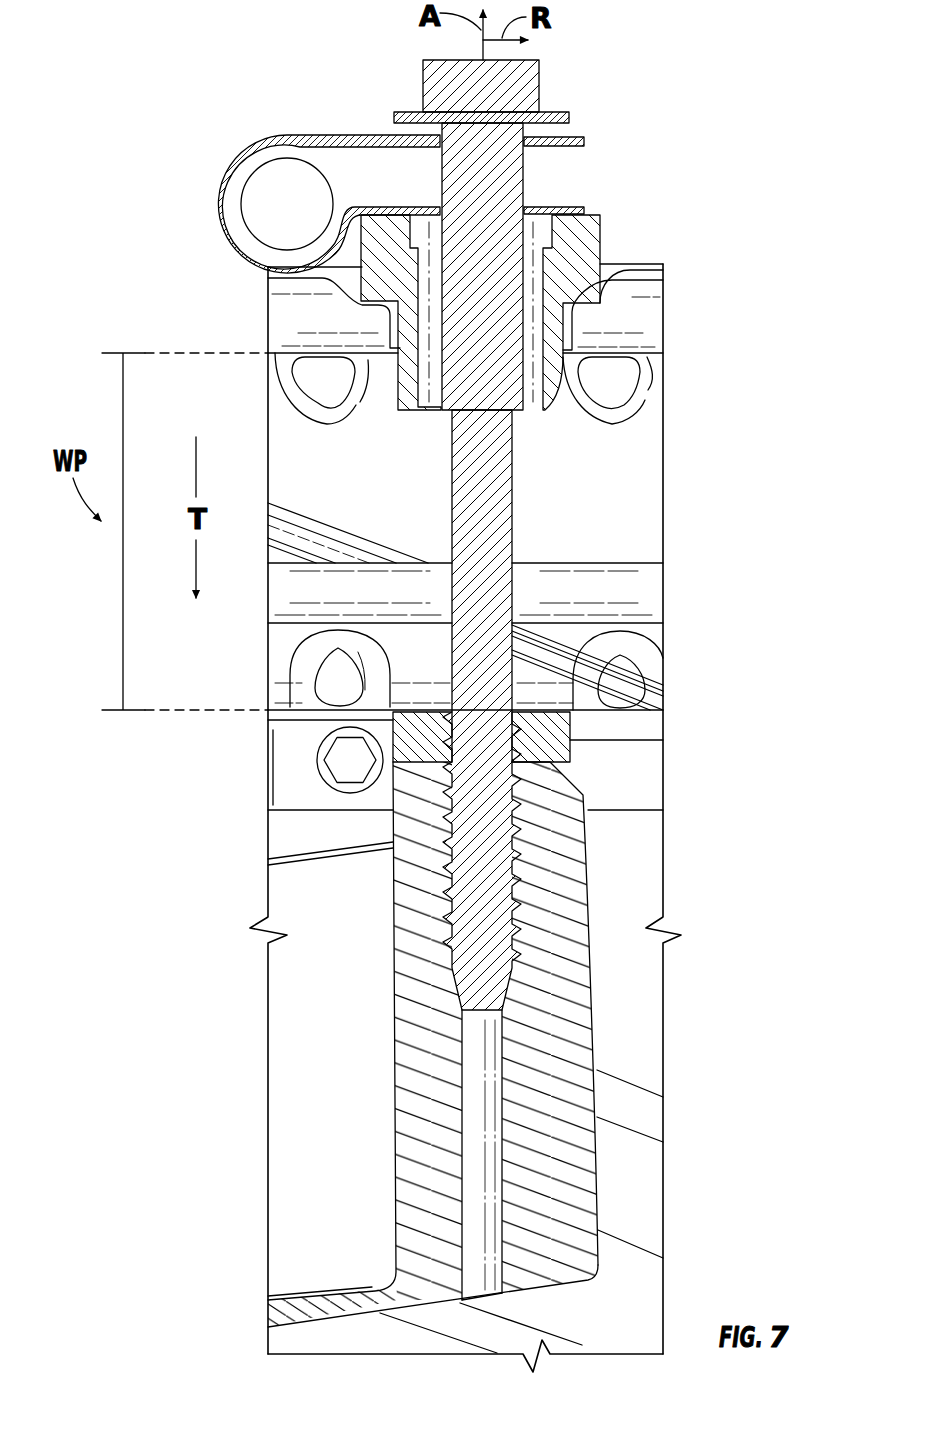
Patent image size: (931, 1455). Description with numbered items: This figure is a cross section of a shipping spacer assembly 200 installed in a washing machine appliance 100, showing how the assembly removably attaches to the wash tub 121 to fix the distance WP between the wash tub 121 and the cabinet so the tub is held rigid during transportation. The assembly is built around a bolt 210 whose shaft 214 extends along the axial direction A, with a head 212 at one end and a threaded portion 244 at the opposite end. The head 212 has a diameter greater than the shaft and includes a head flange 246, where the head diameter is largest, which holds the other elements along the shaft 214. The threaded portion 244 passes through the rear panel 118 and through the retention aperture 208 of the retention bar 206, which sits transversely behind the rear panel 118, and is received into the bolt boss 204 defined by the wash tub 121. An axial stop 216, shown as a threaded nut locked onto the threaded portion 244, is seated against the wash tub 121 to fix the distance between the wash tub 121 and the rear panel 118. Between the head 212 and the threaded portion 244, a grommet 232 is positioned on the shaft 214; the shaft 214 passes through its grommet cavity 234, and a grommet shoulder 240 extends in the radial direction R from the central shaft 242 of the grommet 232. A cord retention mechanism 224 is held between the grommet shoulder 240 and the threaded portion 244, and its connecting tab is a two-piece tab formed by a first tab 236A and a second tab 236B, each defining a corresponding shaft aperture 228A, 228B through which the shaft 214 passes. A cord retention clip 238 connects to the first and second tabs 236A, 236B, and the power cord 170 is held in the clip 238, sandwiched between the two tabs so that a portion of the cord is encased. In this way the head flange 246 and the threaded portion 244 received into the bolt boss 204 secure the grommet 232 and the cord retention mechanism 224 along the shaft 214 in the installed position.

The washing machine appliance 100 is at (508, 818).
The rear panel 118 is at (647, 368).
The wash tub 121 is at (309, 703).
The power cord 170 is at (262, 192).
The shipping spacer assembly 200 is at (421, 520).
The bolt boss 204 is at (461, 824).
The retention bar 206 is at (640, 282).
The retention aperture 208 is at (545, 402).
The bolt 210 is at (515, 520).
The head 212 is at (525, 58).
The shaft 214 is at (513, 447).
The axial stop 216 is at (575, 742).
The cord retention mechanism 224 is at (289, 170).
The shaft aperture 228A is at (502, 209).
The shaft aperture 228B is at (447, 139).
The grommet 232 is at (524, 363).
The grommet cavity 234 is at (447, 326).
The first tab 236A is at (584, 208).
The second tab 236B is at (584, 142).
The cord retention clip 238 is at (229, 238).
The grommet shoulder 240 is at (374, 308).
The central shaft 242 is at (398, 383).
The threaded portion 244 is at (517, 870).
The head flange 246 is at (560, 112).